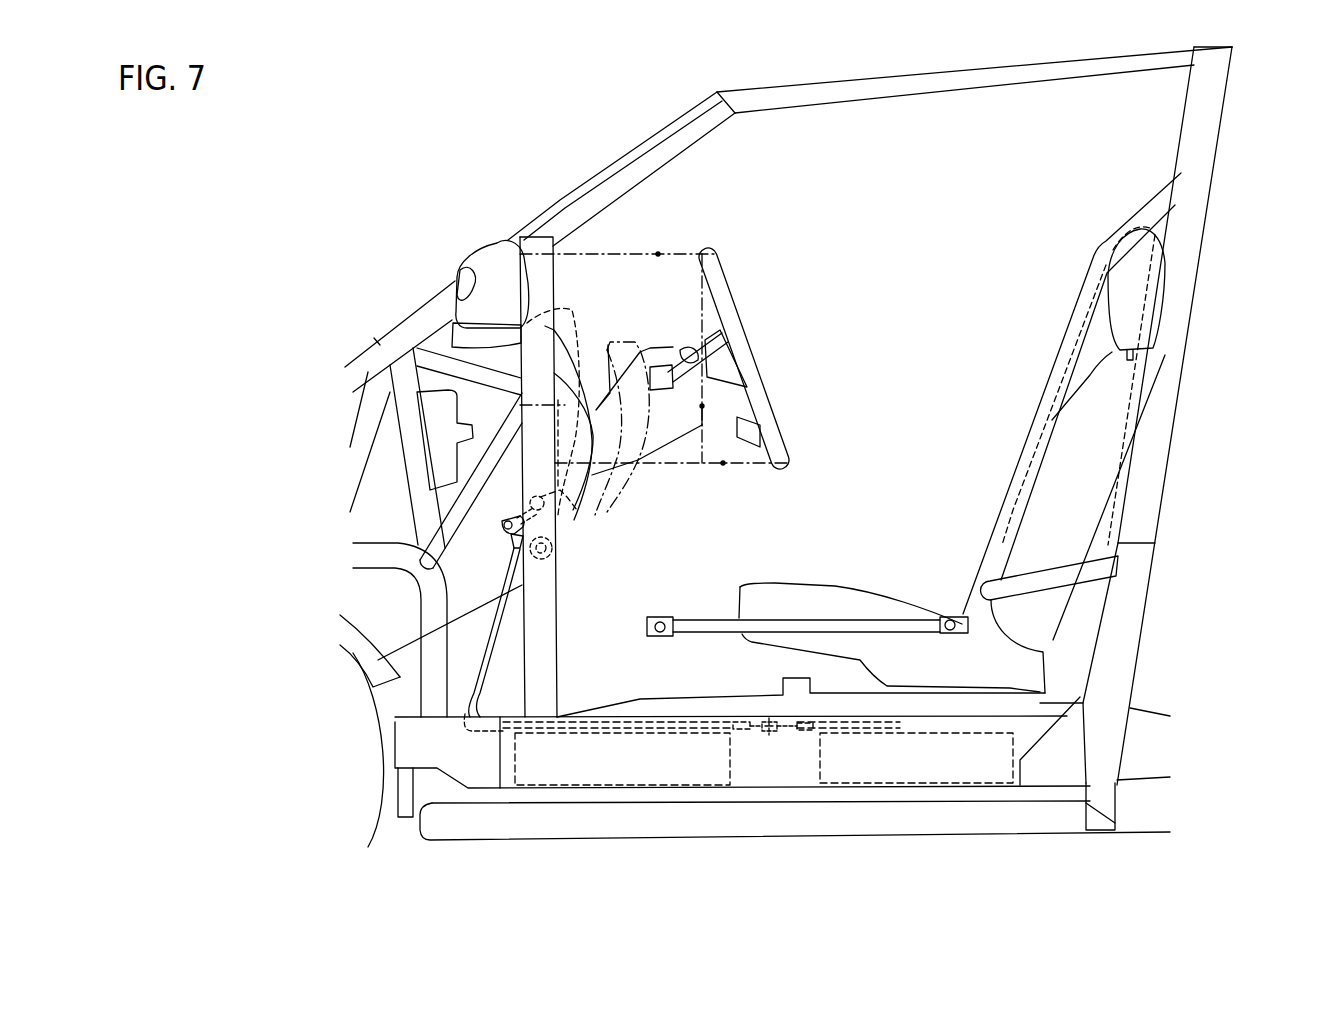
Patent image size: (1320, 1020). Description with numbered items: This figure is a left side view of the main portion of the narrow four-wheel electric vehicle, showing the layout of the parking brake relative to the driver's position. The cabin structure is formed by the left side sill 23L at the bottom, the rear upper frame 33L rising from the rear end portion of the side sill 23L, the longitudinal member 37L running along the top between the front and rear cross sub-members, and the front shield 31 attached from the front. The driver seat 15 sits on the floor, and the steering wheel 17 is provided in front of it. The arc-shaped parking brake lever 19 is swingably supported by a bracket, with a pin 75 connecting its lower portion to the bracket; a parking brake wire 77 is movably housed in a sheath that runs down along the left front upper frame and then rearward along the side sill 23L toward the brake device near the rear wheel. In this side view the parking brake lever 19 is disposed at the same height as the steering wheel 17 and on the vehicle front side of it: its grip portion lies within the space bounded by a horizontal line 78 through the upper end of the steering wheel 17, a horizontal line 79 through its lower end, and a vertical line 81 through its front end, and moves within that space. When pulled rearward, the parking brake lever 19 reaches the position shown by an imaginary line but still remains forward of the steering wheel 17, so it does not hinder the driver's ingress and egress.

The longitudinal member 37L is at (930, 83).
The front shield 31 is at (580, 185).
The rear upper frame 33L is at (1162, 425).
The horizontal line 78 is at (658, 254).
The parking brake lever 19 is at (567, 347).
The steering wheel 17 is at (752, 356).
The vertical line 81 is at (702, 406).
The horizontal line 79 is at (723, 463).
The pin 75 is at (557, 548).
The driver seat 15 is at (857, 600).
The parking brake wire 77 is at (760, 733).
The side sill 23L is at (779, 773).